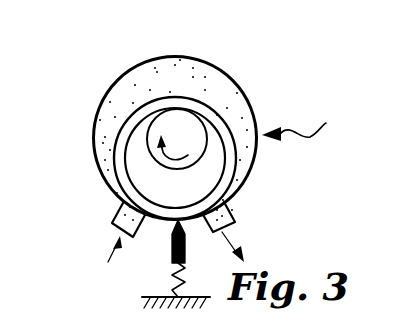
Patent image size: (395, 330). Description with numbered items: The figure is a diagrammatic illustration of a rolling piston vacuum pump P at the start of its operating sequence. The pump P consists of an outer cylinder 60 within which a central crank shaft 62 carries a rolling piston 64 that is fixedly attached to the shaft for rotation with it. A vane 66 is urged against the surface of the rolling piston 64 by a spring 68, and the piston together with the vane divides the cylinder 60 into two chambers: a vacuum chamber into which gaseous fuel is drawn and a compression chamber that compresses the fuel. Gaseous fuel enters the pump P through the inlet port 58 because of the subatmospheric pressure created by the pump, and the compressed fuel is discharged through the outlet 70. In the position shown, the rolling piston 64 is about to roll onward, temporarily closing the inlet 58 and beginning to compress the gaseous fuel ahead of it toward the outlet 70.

The outer cylinder 60 is at (169, 56).
The rolling piston 64 is at (138, 120).
The central crank shaft 62 is at (185, 137).
The inlet port 58 is at (124, 212).
The outlet 70 is at (231, 212).
The vane 66 is at (172, 242).
The spring 68 is at (177, 278).
The pump P is at (299, 128).